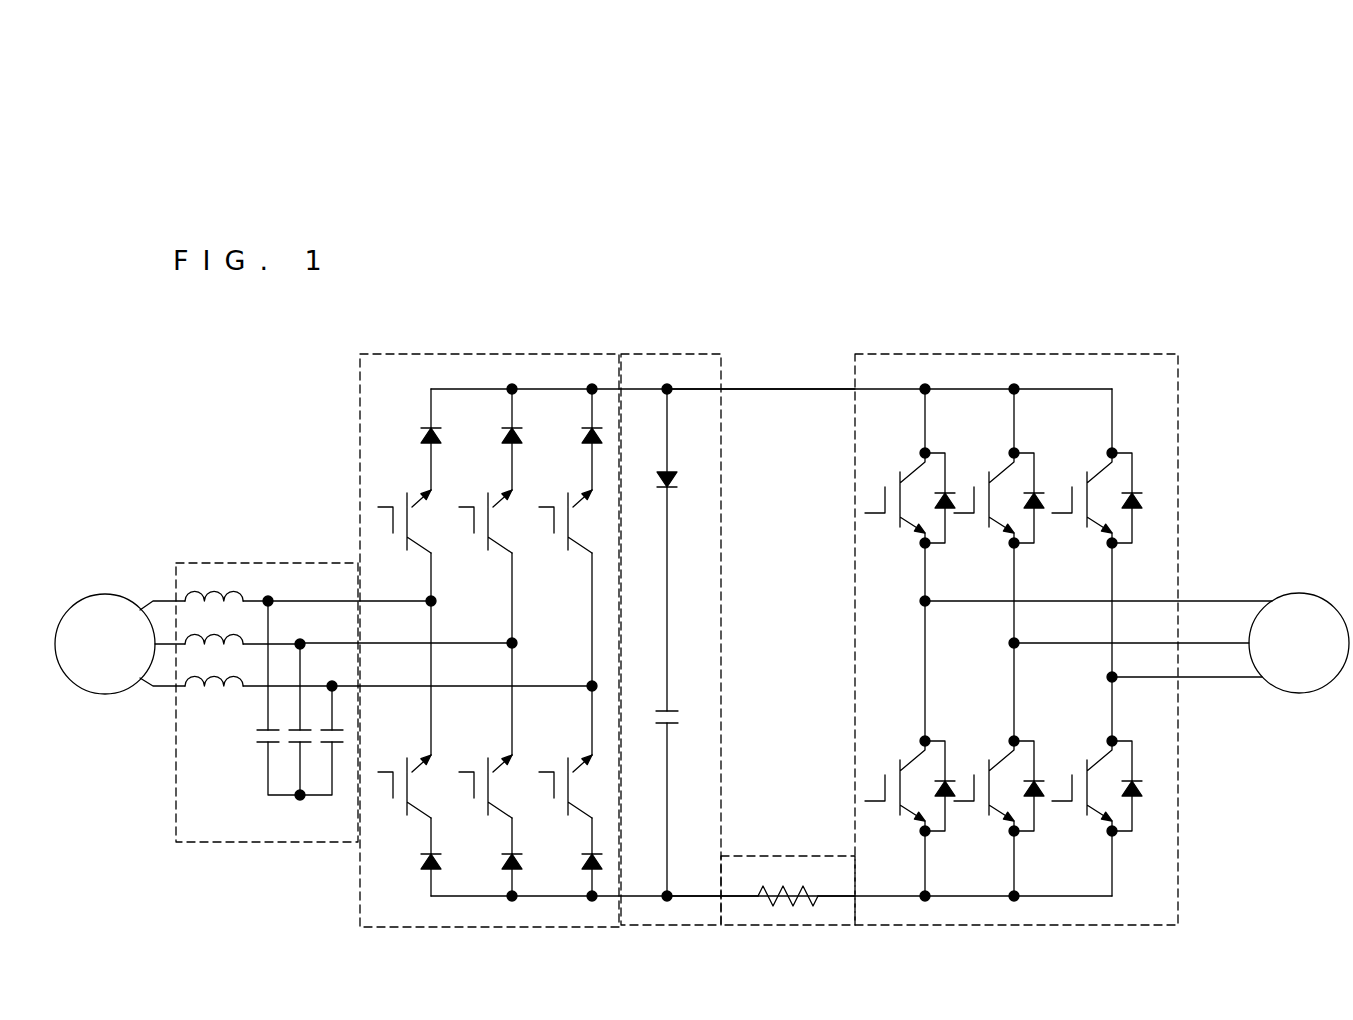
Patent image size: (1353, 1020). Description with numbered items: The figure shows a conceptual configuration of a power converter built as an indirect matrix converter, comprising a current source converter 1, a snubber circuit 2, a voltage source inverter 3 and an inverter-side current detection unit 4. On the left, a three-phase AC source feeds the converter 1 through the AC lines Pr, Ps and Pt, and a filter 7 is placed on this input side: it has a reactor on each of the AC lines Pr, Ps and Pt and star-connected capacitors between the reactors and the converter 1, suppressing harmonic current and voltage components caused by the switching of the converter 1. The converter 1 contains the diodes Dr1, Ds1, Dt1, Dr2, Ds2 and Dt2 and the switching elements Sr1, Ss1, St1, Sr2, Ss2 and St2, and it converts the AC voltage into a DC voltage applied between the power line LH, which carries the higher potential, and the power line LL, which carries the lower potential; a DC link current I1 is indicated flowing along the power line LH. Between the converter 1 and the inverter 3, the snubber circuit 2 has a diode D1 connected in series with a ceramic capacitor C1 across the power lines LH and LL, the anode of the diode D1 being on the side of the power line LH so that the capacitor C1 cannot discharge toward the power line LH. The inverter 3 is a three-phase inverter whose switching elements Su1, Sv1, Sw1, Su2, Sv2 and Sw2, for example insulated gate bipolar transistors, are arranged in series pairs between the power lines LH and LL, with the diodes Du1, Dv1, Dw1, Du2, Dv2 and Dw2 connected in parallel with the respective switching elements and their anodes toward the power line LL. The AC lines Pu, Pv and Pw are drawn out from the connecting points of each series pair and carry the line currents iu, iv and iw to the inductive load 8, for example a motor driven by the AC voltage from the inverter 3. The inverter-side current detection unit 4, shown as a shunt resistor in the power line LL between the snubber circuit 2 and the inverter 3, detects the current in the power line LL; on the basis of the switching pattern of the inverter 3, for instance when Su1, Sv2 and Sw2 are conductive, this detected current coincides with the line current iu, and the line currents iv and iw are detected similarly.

The current source converter 1 is at (430, 353).
The snubber circuit 2 is at (690, 353).
The voltage source inverter 3 is at (1017, 354).
The inverter-side current detection unit 4 is at (796, 856).
The filter 7 is at (268, 563).
The inductive load 8 is at (1298, 593).
The power line LH is at (652, 388).
The power line LL is at (697, 895).
The capacitor C1 is at (660, 703).
The diode D1 is at (684, 550).
The DC link current I1 is at (808, 377).
The switching element Sr1 is at (404, 545).
The switching element Ss1 is at (485, 566).
The switching element St1 is at (565, 588).
The switching element Sr2 is at (404, 727).
The switching element Ss2 is at (485, 748).
The switching element St2 is at (565, 770).
The diode Dr1 is at (409, 439).
The diode Ds1 is at (488, 439).
The diode Dt1 is at (568, 439).
The diode Dr2 is at (409, 872).
The diode Ds2 is at (488, 872).
The diode Dt2 is at (568, 872).
The AC line Pr is at (390, 603).
The AC line Ps is at (472, 642).
The AC line Pt is at (555, 685).
The switching element Su1 is at (897, 506).
The switching element Sv1 is at (986, 506).
The switching element Sw1 is at (1084, 506).
The switching element Su2 is at (897, 783).
The switching element Sv2 is at (986, 783).
The switching element Sw2 is at (1084, 783).
The diode Du1 is at (950, 487).
The diode Dv1 is at (1038, 487).
The diode Dw1 is at (1135, 487).
The diode Du2 is at (950, 800).
The diode Dv2 is at (1040, 800).
The diode Dw2 is at (1137, 800).
The AC line Pu is at (955, 603).
The AC line Pv is at (1055, 645).
The AC line Pw is at (1150, 680).
The line current iu is at (1220, 598).
The line current iv is at (1220, 638).
The line current iw is at (1220, 694).